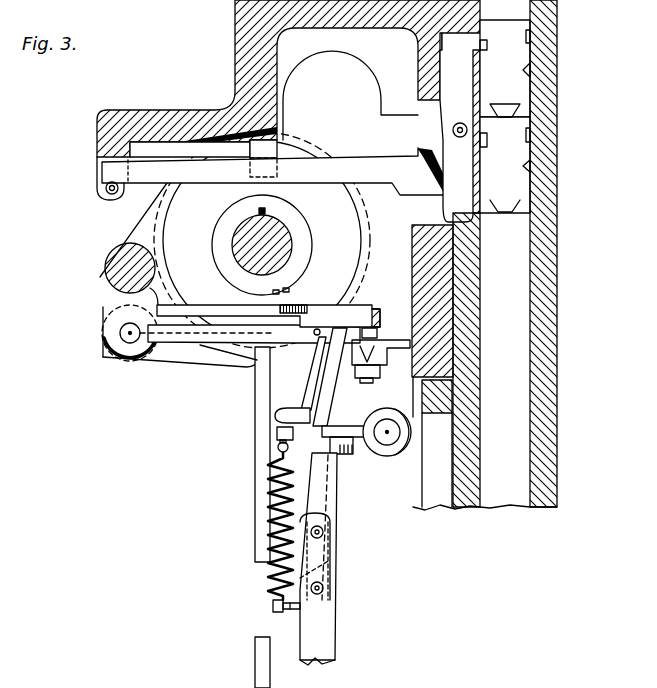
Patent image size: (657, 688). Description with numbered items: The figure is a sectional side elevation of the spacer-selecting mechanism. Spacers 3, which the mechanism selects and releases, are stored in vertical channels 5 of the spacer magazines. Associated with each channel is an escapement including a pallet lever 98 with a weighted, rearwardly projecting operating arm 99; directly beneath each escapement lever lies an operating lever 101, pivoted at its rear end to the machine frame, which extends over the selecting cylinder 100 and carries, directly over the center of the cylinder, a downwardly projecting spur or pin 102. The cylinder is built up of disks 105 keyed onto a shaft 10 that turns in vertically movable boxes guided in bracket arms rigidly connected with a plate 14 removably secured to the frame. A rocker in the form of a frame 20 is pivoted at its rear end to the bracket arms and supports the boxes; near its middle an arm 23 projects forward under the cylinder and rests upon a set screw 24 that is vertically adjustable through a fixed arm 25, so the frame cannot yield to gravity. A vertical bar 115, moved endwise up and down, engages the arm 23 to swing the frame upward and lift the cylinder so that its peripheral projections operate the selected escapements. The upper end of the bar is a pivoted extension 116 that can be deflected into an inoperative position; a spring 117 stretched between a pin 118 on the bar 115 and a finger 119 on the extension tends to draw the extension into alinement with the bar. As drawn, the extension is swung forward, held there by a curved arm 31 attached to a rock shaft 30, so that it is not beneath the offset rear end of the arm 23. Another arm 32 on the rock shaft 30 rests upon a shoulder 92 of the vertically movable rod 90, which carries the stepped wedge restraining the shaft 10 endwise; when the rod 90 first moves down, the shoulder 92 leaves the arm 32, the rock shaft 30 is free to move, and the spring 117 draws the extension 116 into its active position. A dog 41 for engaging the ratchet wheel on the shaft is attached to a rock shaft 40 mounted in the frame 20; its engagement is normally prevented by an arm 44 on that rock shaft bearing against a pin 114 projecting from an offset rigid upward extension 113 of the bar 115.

The spacers 3 is at (505, 116).
The vertical channels 5 is at (528, 253).
The shaft 10 is at (233, 247).
The plate 14 is at (413, 292).
The frame 20 is at (105, 297).
The arm 23 is at (213, 300).
The set screw 24 is at (370, 337).
The fixed arm 25 is at (370, 355).
The rock shaft 30 is at (387, 431).
The curved arm 31 is at (328, 392).
The arm 32 is at (287, 408).
The rock shaft 40 is at (128, 340).
The dog 41 is at (188, 357).
The arm 44 is at (258, 385).
The vertically movable rod 90 is at (275, 414).
The shoulder 92 is at (277, 432).
The pallet lever 98 is at (460, 123).
The operating arm 99 is at (350, 95).
The selecting cylinder 100 is at (217, 219).
The operating lever 101 is at (274, 174).
The spur 102 is at (203, 168).
The disks 105 is at (300, 252).
The upward extension 113 is at (243, 385).
The pin 114 is at (317, 330).
The vertical bar 115 is at (333, 627).
The extension 116 is at (334, 492).
The spring 117 is at (270, 505).
The pin 118 is at (274, 606).
The finger 119 is at (300, 446).